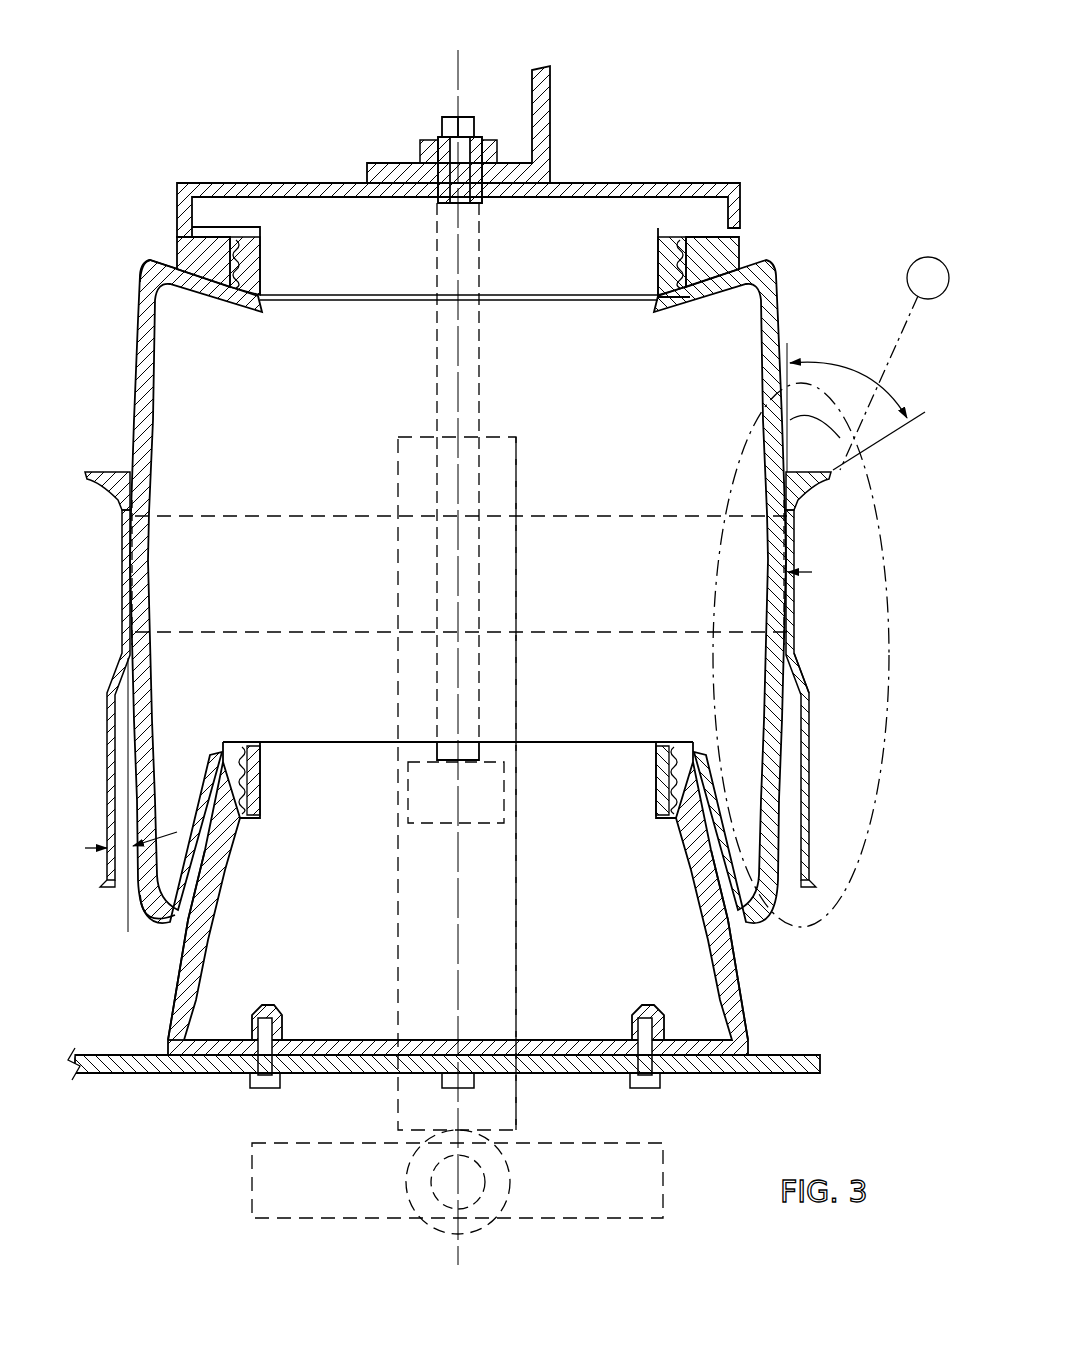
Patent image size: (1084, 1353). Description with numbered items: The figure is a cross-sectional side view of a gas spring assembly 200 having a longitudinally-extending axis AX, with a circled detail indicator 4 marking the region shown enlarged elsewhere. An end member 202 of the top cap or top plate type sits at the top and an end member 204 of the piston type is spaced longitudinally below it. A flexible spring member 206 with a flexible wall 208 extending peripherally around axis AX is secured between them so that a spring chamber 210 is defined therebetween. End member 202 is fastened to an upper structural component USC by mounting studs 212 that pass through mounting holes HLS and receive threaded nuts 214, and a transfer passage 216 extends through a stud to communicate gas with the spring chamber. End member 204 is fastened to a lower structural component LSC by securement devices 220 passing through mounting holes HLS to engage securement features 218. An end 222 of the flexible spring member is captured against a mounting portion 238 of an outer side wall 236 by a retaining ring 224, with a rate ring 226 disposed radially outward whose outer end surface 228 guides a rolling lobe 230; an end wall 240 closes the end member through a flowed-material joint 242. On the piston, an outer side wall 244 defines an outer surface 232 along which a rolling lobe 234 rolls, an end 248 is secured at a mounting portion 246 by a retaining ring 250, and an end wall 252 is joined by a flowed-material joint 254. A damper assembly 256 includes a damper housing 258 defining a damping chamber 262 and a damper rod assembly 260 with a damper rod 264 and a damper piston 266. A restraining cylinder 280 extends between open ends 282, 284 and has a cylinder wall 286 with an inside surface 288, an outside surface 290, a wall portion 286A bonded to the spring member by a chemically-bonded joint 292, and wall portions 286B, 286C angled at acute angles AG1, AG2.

The gas spring assembly 200 is at (847, 180).
The end member 202 is at (223, 178).
The end member 204 is at (742, 995).
The flexible spring member 206 is at (132, 402).
The flexible wall 208 is at (122, 722).
The spring chamber 210 is at (195, 352).
The mounting studs 212 is at (440, 128).
The threaded nuts 214 is at (420, 150).
The transfer passage 216 is at (463, 112).
The securement features 218 is at (272, 1030).
The securement devices 220 is at (256, 1086).
The end 222 is at (690, 318).
The retaining ring 224 is at (660, 255).
The rate ring 226 is at (738, 250).
The outer end surface 228 is at (185, 250).
The rolling lobe 230 is at (148, 268).
The outer surface 232 is at (170, 1000).
The rolling lobe 234 is at (170, 925).
The outer side wall 236 is at (246, 233).
The mounting portion 238 is at (252, 278).
The end wall 240 is at (260, 181).
The flowed-material joint 242 is at (722, 200).
The outer side wall 244 is at (200, 905).
The mounting portion 246 is at (262, 785).
The end 248 is at (219, 738).
The retaining ring 250 is at (655, 775).
The end wall 252 is at (355, 1043).
The flowed-material joint 254 is at (190, 1038).
The damper assembly 256 is at (378, 436).
The damper housing 258 is at (522, 472).
The damper rod assembly 260 is at (434, 362).
The damping chamber 262 is at (492, 908).
The damper rod 264 is at (481, 385).
The damper piston 266 is at (506, 777).
The restraining cylinder 280 is at (118, 668).
The open end 282 is at (116, 470).
The open end 284 is at (794, 888).
The cylinder wall 286 is at (797, 655).
The wall portion 286A is at (794, 530).
The wall portion 286B is at (832, 482).
The wall portion 286C is at (116, 788).
The inside surface 288 is at (806, 750).
The outside surface 290 is at (812, 725).
The chemically-bonded joint 292 is at (813, 572).
The detail view indicator 4 is at (831, 592).
The longitudinally-extending axis AX is at (462, 335).
The upper structural component USC is at (552, 100).
The lower structural component LSC is at (140, 1075).
The mounting holes HLS is at (428, 197).
The acute angle AG1 is at (840, 372).
The acute angle AG2 is at (96, 852).